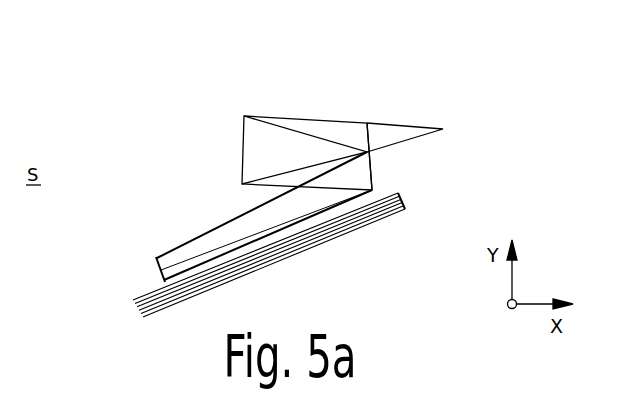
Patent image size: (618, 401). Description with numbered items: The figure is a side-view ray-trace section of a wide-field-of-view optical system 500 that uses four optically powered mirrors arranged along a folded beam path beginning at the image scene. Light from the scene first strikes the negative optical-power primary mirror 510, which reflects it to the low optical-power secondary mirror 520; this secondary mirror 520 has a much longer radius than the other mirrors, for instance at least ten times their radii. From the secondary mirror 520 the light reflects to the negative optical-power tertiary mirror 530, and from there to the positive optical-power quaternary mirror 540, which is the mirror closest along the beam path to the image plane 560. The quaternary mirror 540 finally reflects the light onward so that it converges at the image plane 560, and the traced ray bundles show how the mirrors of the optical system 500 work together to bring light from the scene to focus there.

The WFOV optical system 500 is at (108, 60).
The primary mirror 510 is at (406, 210).
The secondary mirror 520 is at (157, 265).
The tertiary mirror 530 is at (370, 158).
The quaternary mirror 540 is at (241, 160).
The image plane 560 is at (443, 129).